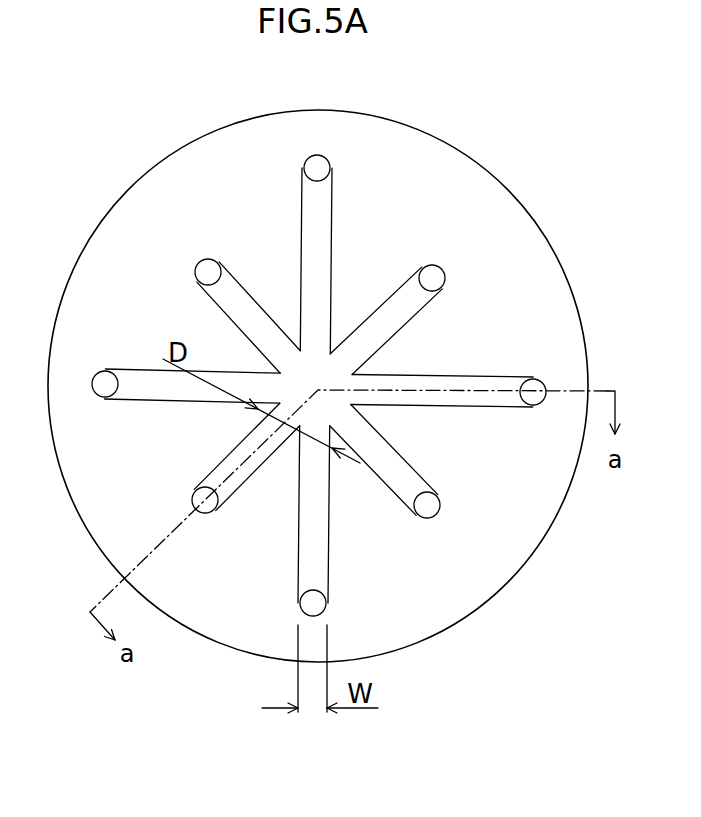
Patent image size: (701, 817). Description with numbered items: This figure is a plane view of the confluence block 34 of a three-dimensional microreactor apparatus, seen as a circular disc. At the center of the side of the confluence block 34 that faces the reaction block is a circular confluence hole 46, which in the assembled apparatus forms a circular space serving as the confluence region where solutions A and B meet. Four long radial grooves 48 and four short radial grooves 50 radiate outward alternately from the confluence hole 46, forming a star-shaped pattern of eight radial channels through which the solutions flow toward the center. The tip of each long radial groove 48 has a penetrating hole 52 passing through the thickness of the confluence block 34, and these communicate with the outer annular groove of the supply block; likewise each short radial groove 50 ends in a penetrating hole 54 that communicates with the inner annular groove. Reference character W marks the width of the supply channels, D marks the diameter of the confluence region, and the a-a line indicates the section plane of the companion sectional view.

The confluence block 34 is at (492, 169).
The confluence hole 46 is at (345, 378).
The long radial grooves 48 is at (332, 213).
The short radial grooves 50 is at (232, 280).
The penetrating holes 52 is at (330, 168).
The penetrating holes 54 is at (195, 272).